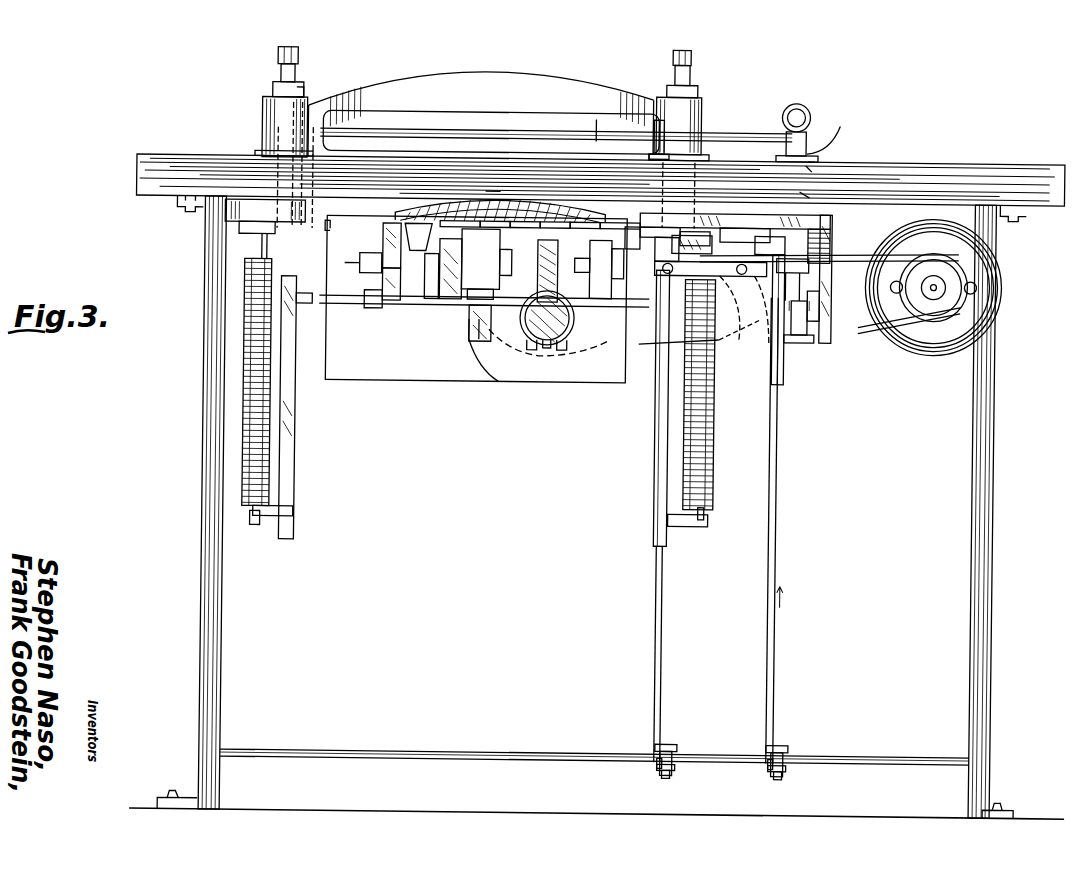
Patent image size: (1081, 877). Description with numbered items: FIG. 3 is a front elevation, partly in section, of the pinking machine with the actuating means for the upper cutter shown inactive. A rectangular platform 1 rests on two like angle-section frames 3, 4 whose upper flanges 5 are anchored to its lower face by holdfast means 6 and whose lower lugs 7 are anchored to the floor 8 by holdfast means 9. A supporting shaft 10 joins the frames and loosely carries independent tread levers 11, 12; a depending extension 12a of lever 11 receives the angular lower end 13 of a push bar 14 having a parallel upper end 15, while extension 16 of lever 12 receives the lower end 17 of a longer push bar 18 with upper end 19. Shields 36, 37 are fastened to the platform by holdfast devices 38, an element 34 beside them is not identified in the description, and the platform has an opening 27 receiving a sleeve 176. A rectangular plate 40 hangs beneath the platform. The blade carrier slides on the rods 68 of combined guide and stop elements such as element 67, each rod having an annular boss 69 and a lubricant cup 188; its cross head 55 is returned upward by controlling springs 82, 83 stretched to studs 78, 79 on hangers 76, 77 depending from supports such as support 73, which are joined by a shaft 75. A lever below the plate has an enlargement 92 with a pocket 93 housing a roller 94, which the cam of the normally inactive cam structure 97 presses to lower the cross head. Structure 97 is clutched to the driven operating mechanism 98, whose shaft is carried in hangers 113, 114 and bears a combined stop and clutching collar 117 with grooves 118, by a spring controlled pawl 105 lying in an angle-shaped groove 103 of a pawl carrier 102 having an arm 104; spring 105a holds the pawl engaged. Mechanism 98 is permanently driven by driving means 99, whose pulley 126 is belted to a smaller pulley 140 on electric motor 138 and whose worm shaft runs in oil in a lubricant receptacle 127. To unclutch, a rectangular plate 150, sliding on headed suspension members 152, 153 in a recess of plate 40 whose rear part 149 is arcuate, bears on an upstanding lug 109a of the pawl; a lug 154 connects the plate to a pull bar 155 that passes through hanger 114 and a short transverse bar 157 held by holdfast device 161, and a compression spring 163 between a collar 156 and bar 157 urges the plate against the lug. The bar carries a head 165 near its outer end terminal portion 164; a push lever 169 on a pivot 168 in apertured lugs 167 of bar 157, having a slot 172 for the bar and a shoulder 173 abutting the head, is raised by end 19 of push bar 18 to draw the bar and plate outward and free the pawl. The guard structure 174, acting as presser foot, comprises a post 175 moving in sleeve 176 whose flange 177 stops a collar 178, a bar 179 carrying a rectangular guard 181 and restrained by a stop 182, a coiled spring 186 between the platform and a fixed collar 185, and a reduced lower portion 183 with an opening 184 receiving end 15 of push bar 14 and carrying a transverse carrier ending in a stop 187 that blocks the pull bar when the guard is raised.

The platform 1 is at (155, 147).
The frame 3 is at (228, 604).
The frame 4 is at (990, 568).
The flanges 5 is at (180, 200).
The holdfast means 6 is at (190, 206).
The lugs or flanges 7 is at (160, 775).
The floor or other support 8 is at (290, 808).
The holdfast means 9 is at (190, 775).
The supporting shaft 10 is at (467, 748).
The tread lever 11 is at (794, 740).
The tread lever 12 is at (683, 740).
The depending extension 12a is at (788, 772).
The angularly disposed lower end 13 is at (778, 766).
The push bar or rod 14 is at (781, 547).
The upper angularly disposed end 15 is at (825, 335).
The depending extension 16 is at (677, 772).
The angularly disposed lower end 17 is at (665, 765).
The push bar or rod 18 is at (668, 673).
The angularly disposed upper end 19 is at (671, 229).
The opening 27 is at (804, 186).
The cap 34 is at (303, 90).
The shield 36 is at (262, 103).
The shield 37 is at (703, 110).
The holdfast devices 38 is at (258, 150).
The rectangular plate 40 is at (332, 202).
The cross head 55 is at (506, 78).
The combined guide and stop element 67 is at (691, 69).
The rod 68 is at (282, 70).
The annular boss 69 is at (298, 82).
The depending support 73 is at (296, 360).
The shaft 75 is at (367, 303).
The hanger 76 is at (297, 507).
The hanger 77 is at (659, 525).
The stud 78 is at (268, 523).
The stud 79 is at (693, 521).
The controlling spring 82 is at (250, 424).
The controlling spring 83 is at (718, 414).
The enlargement 92 is at (526, 377).
The pocket 93 is at (469, 335).
The roller 94 is at (479, 337).
The rotatable cam structure 97 is at (486, 264).
The driven operating mechanism 98 is at (539, 255).
The driving means 99 is at (573, 325).
The clutching member or pawl carrier 102 is at (473, 331).
The angle-shaped groove 103 is at (431, 295).
The arm 104 is at (493, 217).
The spring controlled clutching member or pawl 105 is at (436, 207).
The controlling spring 105a is at (446, 297).
The upstanding lug 109a is at (492, 188).
The hanger 113 is at (371, 271).
The hanger 114 is at (633, 222).
The combined stop and clutching collar 117 is at (413, 247).
The transverse grooves 118 is at (366, 326).
The driven pulley 126 is at (547, 355).
The lubricant receiving receptacle 127 is at (601, 295).
The electric motor 138 is at (950, 330).
The pulley 140 is at (937, 250).
The arcuate part of recess 149 is at (425, 204).
The rectangular plate 150 is at (583, 217).
The headed suspension member 152 is at (463, 217).
The headed suspension member 153 is at (549, 217).
The lug 154 is at (601, 217).
The pull bar or rod 155 is at (656, 221).
The collar 156 is at (701, 225).
The short bar 157 is at (746, 221).
The holdfast device 161 is at (526, 217).
The compression spring 163 is at (693, 228).
The outer end terminal portion 164 is at (831, 223).
The head 165 is at (858, 189).
The apertured lugs 167 is at (719, 269).
The pivot 168 is at (746, 311).
The push lever 169 is at (737, 308).
The slot 172 is at (770, 229).
The shoulder 173 is at (757, 323).
The guard structure 174 is at (596, 124).
The post 175 is at (809, 146).
The sleeve 176 is at (810, 162).
The flange 177 is at (779, 148).
The stop collar 178 is at (810, 154).
The bar 179 is at (537, 128).
The rectangular guard 181 is at (418, 120).
The stop 182 is at (657, 112).
The reduced lower portion 183 is at (787, 365).
The opening 184 is at (803, 335).
The fixed collar 185 is at (786, 293).
The coiled controlling spring 186 is at (806, 210).
The vertically disposed stop 187 is at (821, 293).
The lubricant cups 188 is at (278, 50).